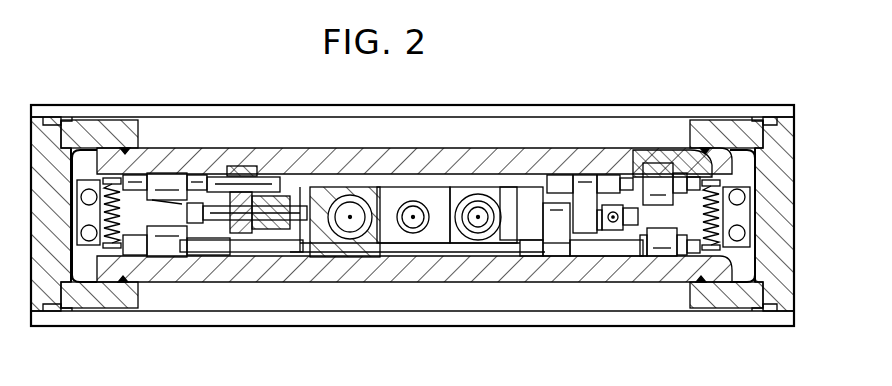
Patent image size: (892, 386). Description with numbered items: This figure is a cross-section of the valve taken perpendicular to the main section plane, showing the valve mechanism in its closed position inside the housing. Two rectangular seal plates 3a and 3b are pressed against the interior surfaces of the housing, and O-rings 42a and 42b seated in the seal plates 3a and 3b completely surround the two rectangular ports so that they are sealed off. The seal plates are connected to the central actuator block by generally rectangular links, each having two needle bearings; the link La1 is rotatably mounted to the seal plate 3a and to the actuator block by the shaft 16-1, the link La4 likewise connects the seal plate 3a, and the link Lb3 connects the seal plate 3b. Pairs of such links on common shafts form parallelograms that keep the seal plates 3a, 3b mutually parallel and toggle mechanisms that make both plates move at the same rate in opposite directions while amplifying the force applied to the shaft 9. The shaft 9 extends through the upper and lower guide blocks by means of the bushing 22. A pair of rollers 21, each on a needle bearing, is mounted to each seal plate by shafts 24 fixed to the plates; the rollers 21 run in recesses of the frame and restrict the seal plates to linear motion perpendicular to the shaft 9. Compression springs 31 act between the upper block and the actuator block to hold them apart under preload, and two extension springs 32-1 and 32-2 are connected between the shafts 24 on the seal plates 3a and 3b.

The seal plate 3a is at (485, 160).
The seal plate 3b is at (487, 265).
The shaft 9 is at (410, 212).
The bushing 22 is at (416, 204).
The roller 21 is at (168, 180).
The shaft 24 is at (108, 176).
The compression spring 31 is at (470, 240).
The extension spring 32-1 is at (73, 228).
The extension spring 32-2 is at (718, 240).
The O-ring 42a is at (127, 148).
The O-ring 42b is at (125, 281).
The shaft 16-1 is at (218, 216).
The link La1 is at (243, 168).
The link La4 is at (587, 183).
The link Lb3 is at (557, 256).